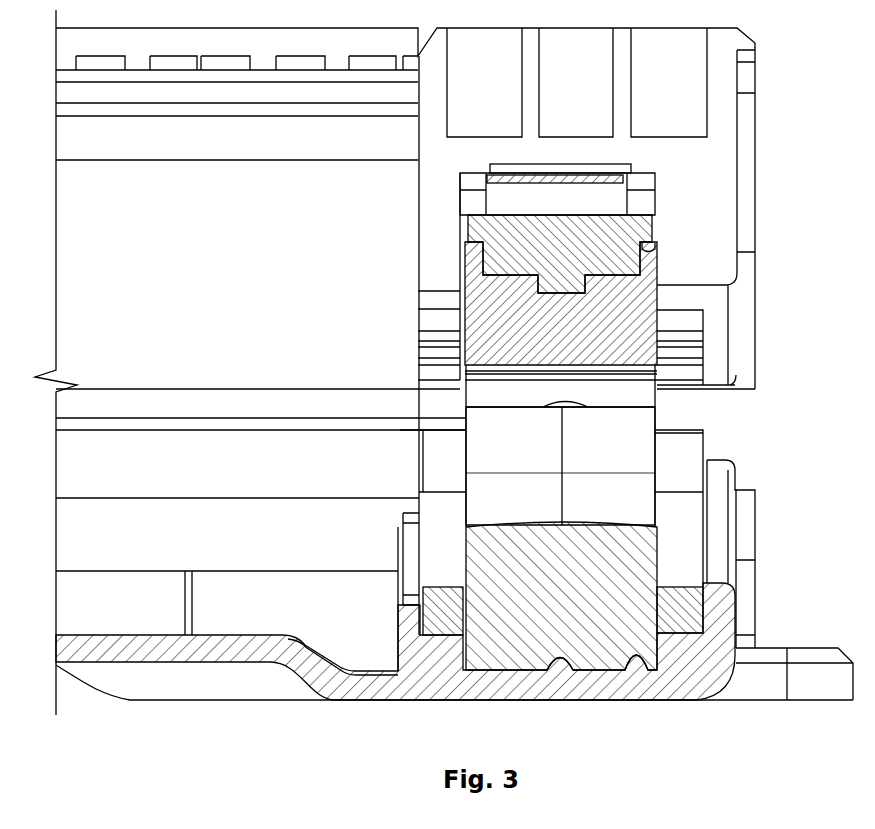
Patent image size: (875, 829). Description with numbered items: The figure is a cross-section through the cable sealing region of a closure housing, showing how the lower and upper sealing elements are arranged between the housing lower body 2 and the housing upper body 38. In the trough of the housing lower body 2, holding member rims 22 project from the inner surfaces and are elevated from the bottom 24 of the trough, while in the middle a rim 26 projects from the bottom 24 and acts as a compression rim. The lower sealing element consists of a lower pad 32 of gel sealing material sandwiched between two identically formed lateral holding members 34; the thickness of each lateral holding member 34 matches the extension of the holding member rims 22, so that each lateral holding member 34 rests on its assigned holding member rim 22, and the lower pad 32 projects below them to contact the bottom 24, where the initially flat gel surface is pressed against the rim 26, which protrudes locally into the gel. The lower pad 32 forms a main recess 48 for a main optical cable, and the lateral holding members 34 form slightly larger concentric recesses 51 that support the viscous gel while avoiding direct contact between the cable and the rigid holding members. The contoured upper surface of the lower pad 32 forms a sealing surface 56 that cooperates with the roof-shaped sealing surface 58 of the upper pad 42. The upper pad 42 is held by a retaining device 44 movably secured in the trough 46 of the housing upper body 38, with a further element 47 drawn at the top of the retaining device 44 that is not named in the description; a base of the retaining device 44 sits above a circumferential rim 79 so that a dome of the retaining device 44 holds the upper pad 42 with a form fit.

The housing lower body 2 is at (748, 486).
The holding member rim 22 is at (679, 630).
The bottom 24 is at (627, 663).
The rim 26 is at (558, 296).
The lower pad 32 is at (636, 570).
The lateral holding member 34 is at (434, 628).
The housing upper body 38 is at (720, 125).
The upper pad 42 is at (651, 277).
The retaining device 44 is at (655, 227).
The trough 46 is at (657, 292).
The plate 47 is at (628, 180).
The main recess 48 is at (650, 438).
The recess 51 is at (690, 472).
The sealing surface 56 is at (572, 366).
The sealing surface 58 is at (550, 400).
The circumferential rim 79 is at (654, 250).